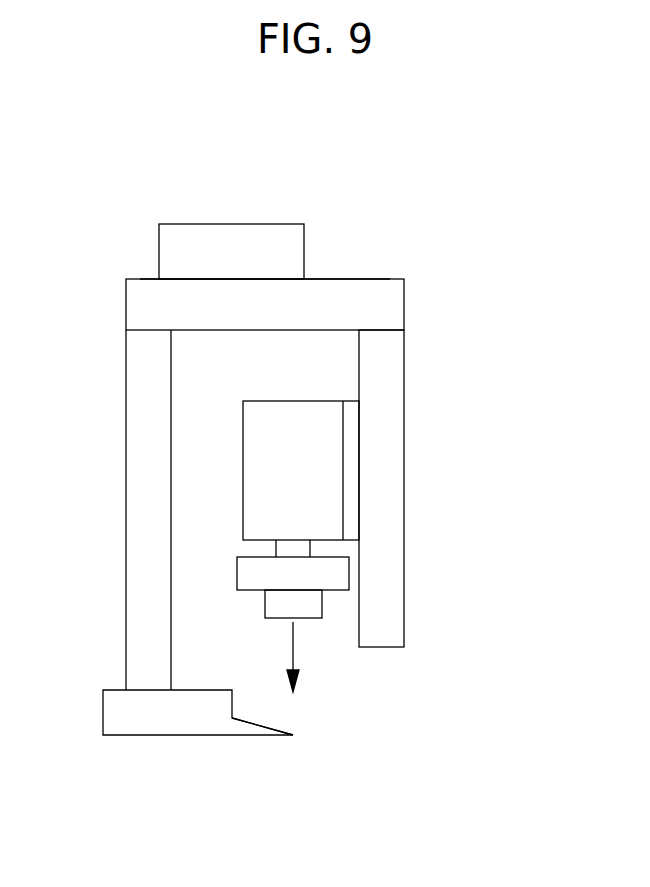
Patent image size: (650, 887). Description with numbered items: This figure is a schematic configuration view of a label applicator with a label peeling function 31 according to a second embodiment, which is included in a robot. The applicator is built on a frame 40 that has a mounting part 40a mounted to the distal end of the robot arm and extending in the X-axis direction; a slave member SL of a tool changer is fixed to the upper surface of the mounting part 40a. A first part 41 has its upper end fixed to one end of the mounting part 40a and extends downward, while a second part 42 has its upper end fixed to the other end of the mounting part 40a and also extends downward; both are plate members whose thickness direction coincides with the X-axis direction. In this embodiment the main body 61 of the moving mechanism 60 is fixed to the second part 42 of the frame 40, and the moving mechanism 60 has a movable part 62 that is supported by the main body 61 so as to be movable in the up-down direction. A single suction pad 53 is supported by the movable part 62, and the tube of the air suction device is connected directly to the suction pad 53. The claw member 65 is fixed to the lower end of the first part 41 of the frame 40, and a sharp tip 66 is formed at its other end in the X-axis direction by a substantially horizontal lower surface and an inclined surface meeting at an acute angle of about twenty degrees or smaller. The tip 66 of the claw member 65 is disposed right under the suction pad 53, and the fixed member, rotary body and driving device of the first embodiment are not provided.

The slave member SL is at (225, 223).
The label applicator with a label peeling function 31 is at (460, 252).
The frame 40 is at (383, 272).
The mounting part 40a is at (328, 293).
The first part 41 is at (142, 405).
The second part 42 is at (396, 421).
The suction pad 53 is at (322, 602).
The moving mechanism 60 is at (348, 386).
The main body 61 is at (328, 472).
The movable part 62 is at (349, 570).
The claw member 65 is at (142, 735).
The tip 66 is at (253, 735).